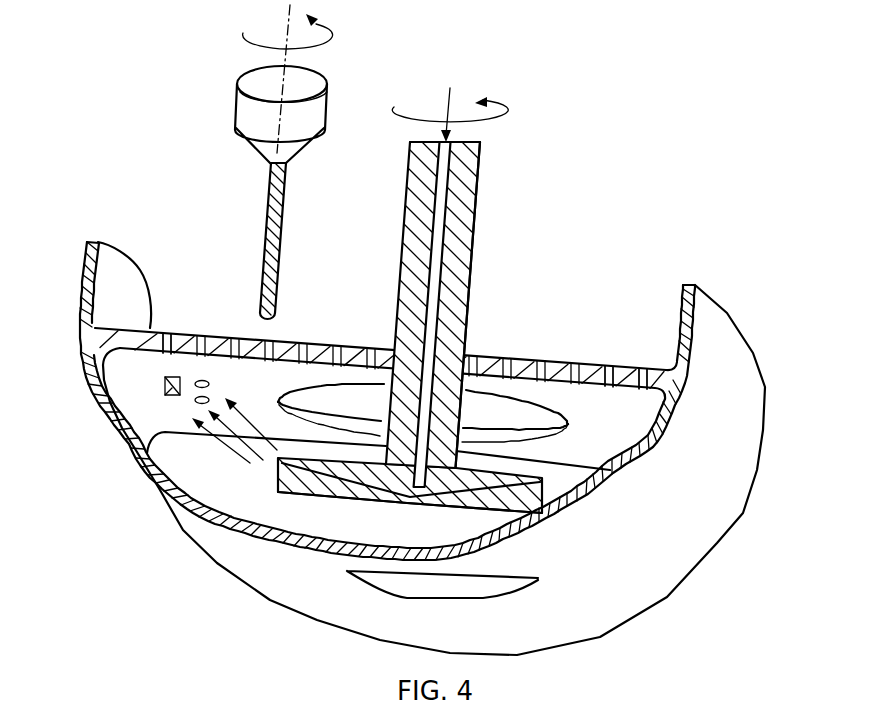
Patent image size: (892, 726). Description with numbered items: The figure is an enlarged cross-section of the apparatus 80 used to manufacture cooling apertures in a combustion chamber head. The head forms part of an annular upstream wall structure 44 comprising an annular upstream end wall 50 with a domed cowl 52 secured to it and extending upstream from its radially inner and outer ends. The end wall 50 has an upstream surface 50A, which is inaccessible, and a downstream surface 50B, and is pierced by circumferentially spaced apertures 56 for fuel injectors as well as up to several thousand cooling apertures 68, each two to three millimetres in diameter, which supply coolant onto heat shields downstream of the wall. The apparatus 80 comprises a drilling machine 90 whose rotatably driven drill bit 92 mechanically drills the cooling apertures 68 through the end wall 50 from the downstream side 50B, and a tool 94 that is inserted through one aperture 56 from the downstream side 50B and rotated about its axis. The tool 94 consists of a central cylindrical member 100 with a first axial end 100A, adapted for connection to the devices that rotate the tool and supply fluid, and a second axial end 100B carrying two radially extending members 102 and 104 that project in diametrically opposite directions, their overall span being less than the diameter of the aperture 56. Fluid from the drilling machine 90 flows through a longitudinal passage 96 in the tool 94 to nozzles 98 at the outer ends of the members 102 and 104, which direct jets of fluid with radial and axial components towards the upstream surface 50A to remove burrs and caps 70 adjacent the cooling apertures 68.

The annular upstream wall structure 44 is at (722, 522).
The annular upstream end wall 50 is at (657, 378).
The upstream surface 50A is at (622, 389).
The downstream surface 50B is at (552, 358).
The domed cowl 52 is at (625, 598).
The aperture 56 is at (474, 406).
The cooling apertures 68 is at (202, 336).
The burrs and/or caps 70 is at (181, 378).
The apparatus 80 is at (612, 126).
The drilling machine 90 is at (248, 106).
The drill bit 92 is at (278, 173).
The tool 94 is at (473, 163).
The passage 96 is at (437, 221).
The nozzles 98 is at (277, 466).
The central cylindrical member 100 is at (409, 271).
The first axial end 100A is at (414, 152).
The second axial end 100B is at (460, 466).
The radially extending member 102 is at (325, 493).
The radially extending member 104 is at (490, 501).